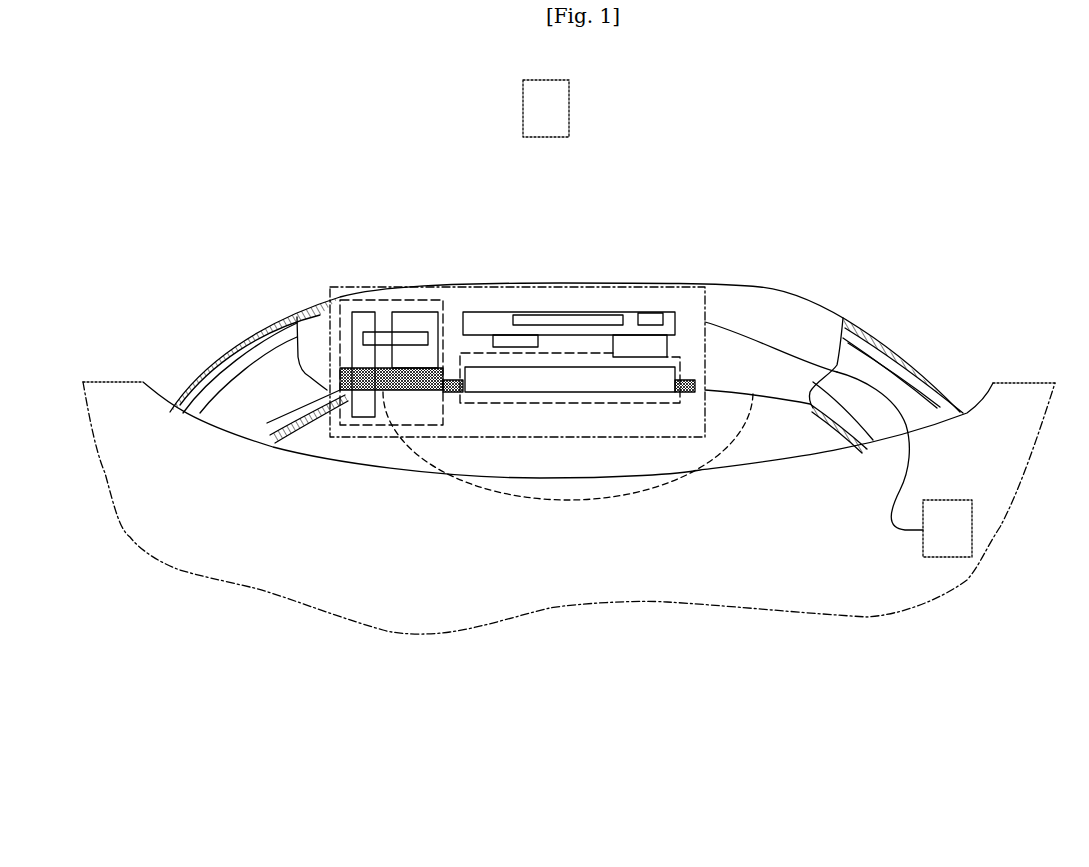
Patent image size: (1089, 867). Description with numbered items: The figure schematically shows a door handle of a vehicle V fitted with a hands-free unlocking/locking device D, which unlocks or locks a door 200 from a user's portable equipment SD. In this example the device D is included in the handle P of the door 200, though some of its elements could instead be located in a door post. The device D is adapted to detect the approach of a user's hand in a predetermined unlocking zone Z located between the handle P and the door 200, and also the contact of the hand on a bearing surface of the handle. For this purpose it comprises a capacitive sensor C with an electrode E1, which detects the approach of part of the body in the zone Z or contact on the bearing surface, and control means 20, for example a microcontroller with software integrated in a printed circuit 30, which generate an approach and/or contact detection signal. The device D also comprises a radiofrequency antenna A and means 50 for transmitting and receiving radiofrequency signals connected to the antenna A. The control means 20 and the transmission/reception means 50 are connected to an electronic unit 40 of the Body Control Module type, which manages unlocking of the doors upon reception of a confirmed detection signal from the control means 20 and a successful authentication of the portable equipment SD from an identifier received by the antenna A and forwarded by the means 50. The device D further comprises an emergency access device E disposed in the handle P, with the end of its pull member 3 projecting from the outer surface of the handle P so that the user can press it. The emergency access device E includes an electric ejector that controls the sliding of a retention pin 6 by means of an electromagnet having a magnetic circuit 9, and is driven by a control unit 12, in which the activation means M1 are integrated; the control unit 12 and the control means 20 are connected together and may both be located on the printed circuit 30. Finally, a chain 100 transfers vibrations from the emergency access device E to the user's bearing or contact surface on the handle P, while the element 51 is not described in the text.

The door 200 is at (1007, 420).
The unlocking/locking device D is at (760, 286).
The handle P is at (897, 368).
The pull member 3 is at (370, 393).
The emergency access device E is at (358, 292).
The retention pin 6 is at (382, 335).
The magnetic circuit 9 is at (413, 320).
The chain for transferring vibrations 100 is at (457, 393).
The printed circuit 30 is at (668, 330).
The control means 20 is at (630, 323).
The activation means M1 is at (510, 333).
The control unit 12 is at (490, 340).
The transmission/reception means 50 is at (635, 347).
The radiofrequency antenna A is at (600, 307).
The substrate plate 51 is at (503, 393).
The electrode E1 is at (563, 393).
The capacitive sensor C is at (610, 393).
The predetermined unlocking zone Z is at (723, 450).
The vehicle V is at (529, 584).
The portable equipment SD is at (558, 112).
The electronic unit 40 is at (947, 528).